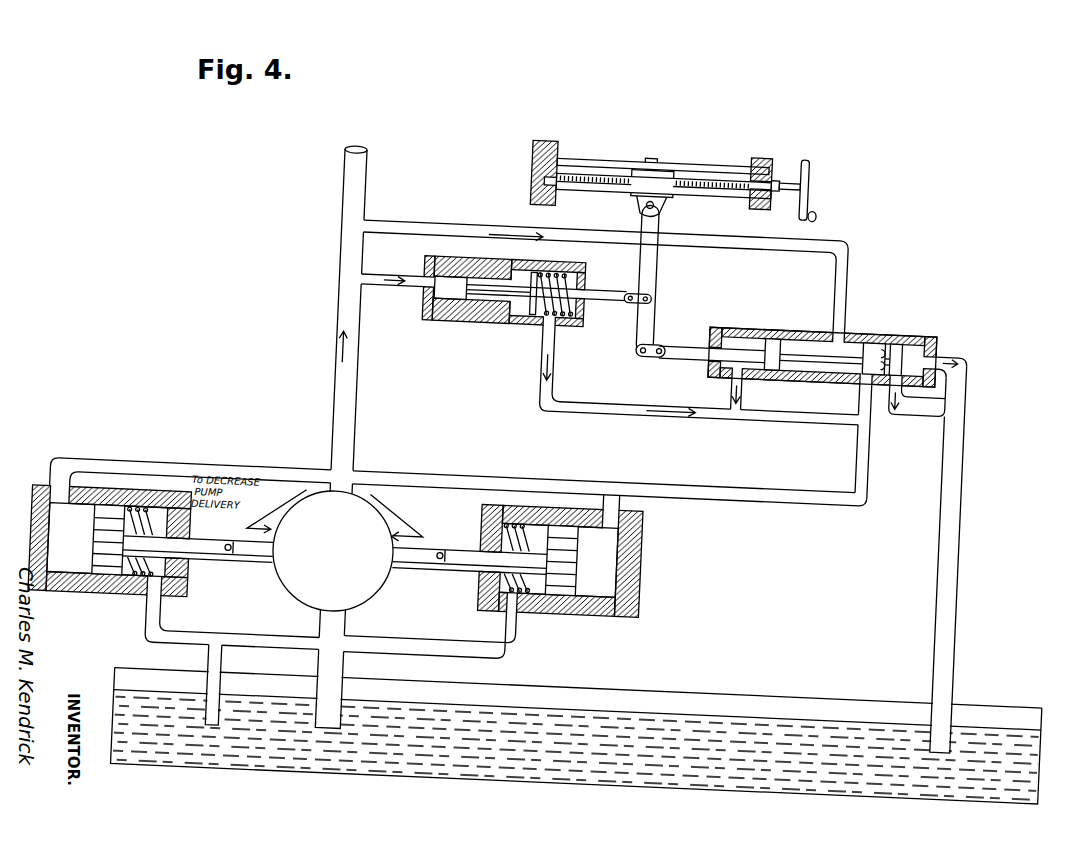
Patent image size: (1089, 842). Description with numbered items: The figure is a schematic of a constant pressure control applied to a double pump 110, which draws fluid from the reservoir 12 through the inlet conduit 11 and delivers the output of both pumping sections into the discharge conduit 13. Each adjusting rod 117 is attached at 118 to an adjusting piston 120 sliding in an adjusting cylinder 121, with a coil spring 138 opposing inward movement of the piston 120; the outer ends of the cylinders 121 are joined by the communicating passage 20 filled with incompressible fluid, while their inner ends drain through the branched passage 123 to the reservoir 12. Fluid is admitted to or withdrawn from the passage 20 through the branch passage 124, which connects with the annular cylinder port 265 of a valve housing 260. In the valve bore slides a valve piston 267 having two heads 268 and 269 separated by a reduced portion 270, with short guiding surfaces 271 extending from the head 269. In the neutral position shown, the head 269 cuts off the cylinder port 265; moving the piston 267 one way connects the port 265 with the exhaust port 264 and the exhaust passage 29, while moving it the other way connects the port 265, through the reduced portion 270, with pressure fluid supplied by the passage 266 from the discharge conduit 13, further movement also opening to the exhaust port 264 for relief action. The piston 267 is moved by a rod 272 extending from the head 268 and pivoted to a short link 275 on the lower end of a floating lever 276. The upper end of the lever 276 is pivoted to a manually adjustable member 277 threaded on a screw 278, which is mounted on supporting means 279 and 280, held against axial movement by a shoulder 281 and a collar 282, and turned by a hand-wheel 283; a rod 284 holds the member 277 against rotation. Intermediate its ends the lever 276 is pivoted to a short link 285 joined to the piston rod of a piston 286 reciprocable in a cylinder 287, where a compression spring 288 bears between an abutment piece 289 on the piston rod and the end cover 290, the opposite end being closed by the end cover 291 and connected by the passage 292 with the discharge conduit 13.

The inlet conduit 11 is at (348, 662).
The reservoir 12 is at (1048, 739).
The discharge conduit portion 13 is at (327, 330).
The communicating passage 20 is at (454, 471).
The exhaust passage 29 is at (938, 600).
The double pump 110 is at (361, 605).
The adjusting rod 117 is at (283, 566).
The attachment of rod to piston 118 is at (230, 556).
The adjusting piston 120 is at (93, 558).
The adjusting cylinder 121 is at (45, 480).
The branched passage 123 is at (196, 637).
The branch passage 124 is at (852, 439).
The coil spring 138 is at (142, 601).
The valve housing 260 is at (891, 335).
The exhaust port 264 is at (917, 400).
The annular cylinder port 265 is at (850, 361).
The pressure supply passage 266 is at (819, 220).
The valve piston 267 is at (806, 300).
The valve piston head 268 is at (763, 316).
The valve piston head 269 is at (866, 327).
The reduced portion 270 is at (836, 328).
The guiding surfaces 271 is at (927, 319).
The rod 272 is at (696, 332).
The short link 275 is at (627, 341).
The floating lever 276 is at (644, 257).
The manually adjustable member 277 is at (641, 158).
The screw 278 is at (672, 181).
The supporting means 279 is at (515, 153).
The supporting means 280 is at (736, 141).
The shoulder 281 is at (745, 191).
The collar 282 is at (757, 160).
The hand-wheel 283 is at (792, 164).
The rod 284 is at (554, 148).
The short link 285 is at (623, 272).
The piston 286 is at (462, 317).
The cylinder 287 is at (445, 317).
The compression spring 288 is at (552, 262).
The abutment piece 289 is at (527, 253).
The end cover 290 is at (547, 320).
The end cover 291 is at (412, 256).
The passage 292 is at (417, 288).